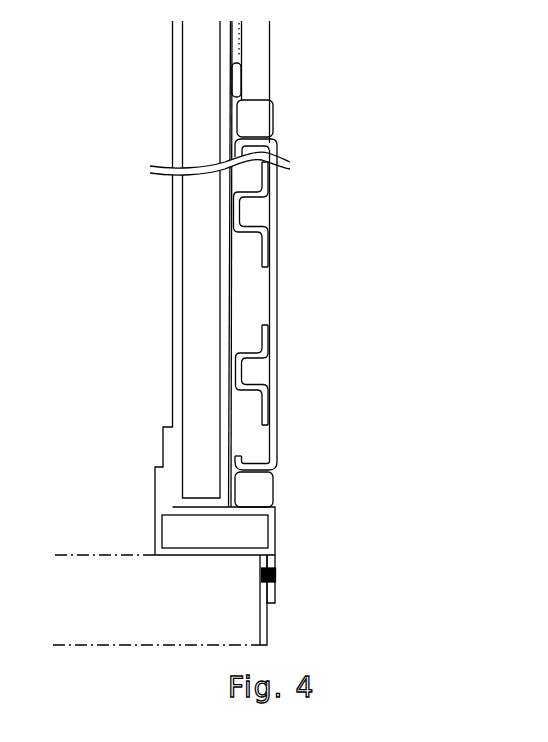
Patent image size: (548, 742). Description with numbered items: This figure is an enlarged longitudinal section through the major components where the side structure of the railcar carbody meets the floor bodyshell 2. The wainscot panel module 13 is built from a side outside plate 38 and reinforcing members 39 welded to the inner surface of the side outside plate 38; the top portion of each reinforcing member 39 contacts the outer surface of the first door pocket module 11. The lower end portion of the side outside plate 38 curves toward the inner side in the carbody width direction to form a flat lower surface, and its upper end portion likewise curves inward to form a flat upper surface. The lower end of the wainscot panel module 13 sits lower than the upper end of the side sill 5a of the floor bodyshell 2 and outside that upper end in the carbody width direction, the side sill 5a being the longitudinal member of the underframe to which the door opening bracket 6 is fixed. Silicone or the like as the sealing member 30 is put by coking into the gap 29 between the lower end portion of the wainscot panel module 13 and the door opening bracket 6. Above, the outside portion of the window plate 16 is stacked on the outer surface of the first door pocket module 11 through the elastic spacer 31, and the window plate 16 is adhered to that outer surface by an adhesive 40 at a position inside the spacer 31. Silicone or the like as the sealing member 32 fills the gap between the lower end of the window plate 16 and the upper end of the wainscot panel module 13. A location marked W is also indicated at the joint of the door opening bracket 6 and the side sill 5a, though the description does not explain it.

The first door pocket module 11 is at (172, 265).
The window plate 16 is at (269, 57).
The adhesive 40 is at (242, 36).
The spacer 31 is at (241, 80).
The sealing member 32 is at (270, 121).
The wainscot panel module 13 is at (338, 300).
The reinforcing member 39 is at (267, 215).
The side outside plate 38 is at (277, 303).
The gap 29 is at (275, 472).
The sealing member 30 is at (263, 492).
The door opening bracket 6 is at (275, 535).
The side sill 5a is at (258, 590).
The weld W is at (275, 577).
The floor bodyshell 2 is at (75, 555).